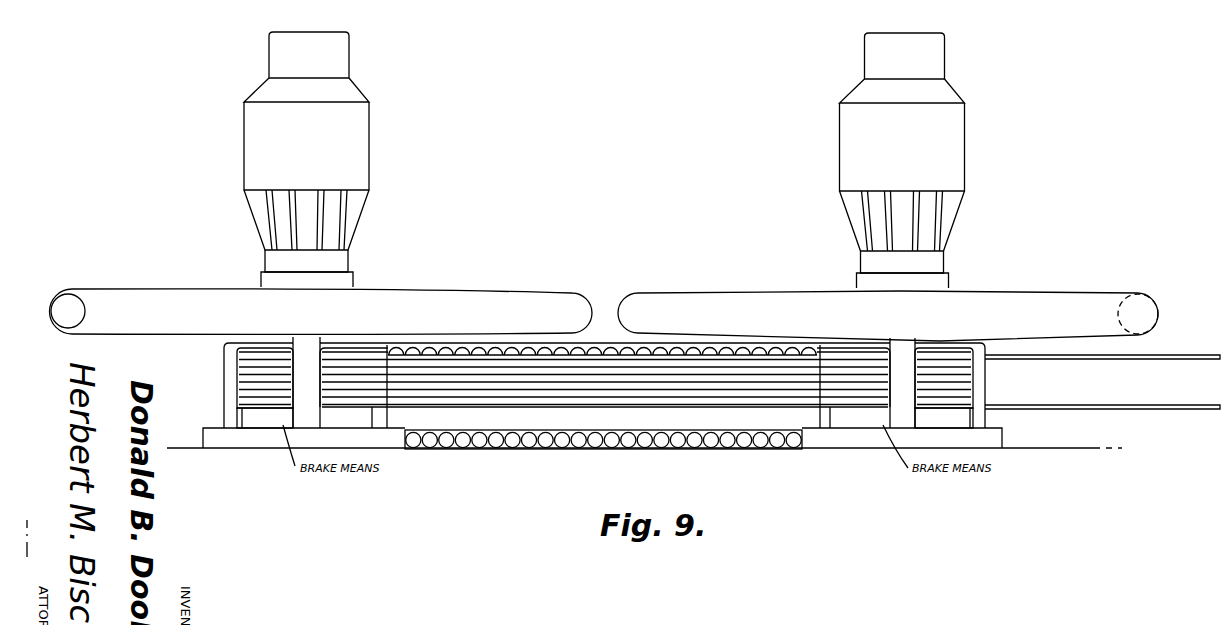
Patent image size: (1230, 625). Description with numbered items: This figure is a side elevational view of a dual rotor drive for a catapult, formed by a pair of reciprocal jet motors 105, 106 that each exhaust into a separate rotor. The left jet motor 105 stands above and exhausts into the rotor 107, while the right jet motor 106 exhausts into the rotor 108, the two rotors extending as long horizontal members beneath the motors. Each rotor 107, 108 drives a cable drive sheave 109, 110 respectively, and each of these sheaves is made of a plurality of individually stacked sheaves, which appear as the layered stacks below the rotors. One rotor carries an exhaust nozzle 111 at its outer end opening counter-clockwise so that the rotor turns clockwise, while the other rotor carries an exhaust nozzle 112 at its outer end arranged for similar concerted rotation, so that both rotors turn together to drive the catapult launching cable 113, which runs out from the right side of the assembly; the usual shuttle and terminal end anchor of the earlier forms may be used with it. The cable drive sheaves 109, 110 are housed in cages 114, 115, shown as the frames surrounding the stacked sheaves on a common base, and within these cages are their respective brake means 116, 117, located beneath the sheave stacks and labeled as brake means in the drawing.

The jet motor 105 is at (364, 124).
The jet motor 106 is at (958, 158).
The rotor 107 is at (435, 292).
The rotor 108 is at (1030, 292).
The cable drive sheave 109 is at (237, 372).
The cable drive sheave 110 is at (968, 388).
The exhaust nozzle 111 is at (71, 304).
The exhaust nozzle 112 is at (1141, 305).
The catapult launching cable 113 is at (1150, 357).
The cage 114 is at (312, 352).
The cage 115 is at (925, 345).
The brake means 116 is at (278, 418).
The brake means 117 is at (878, 420).